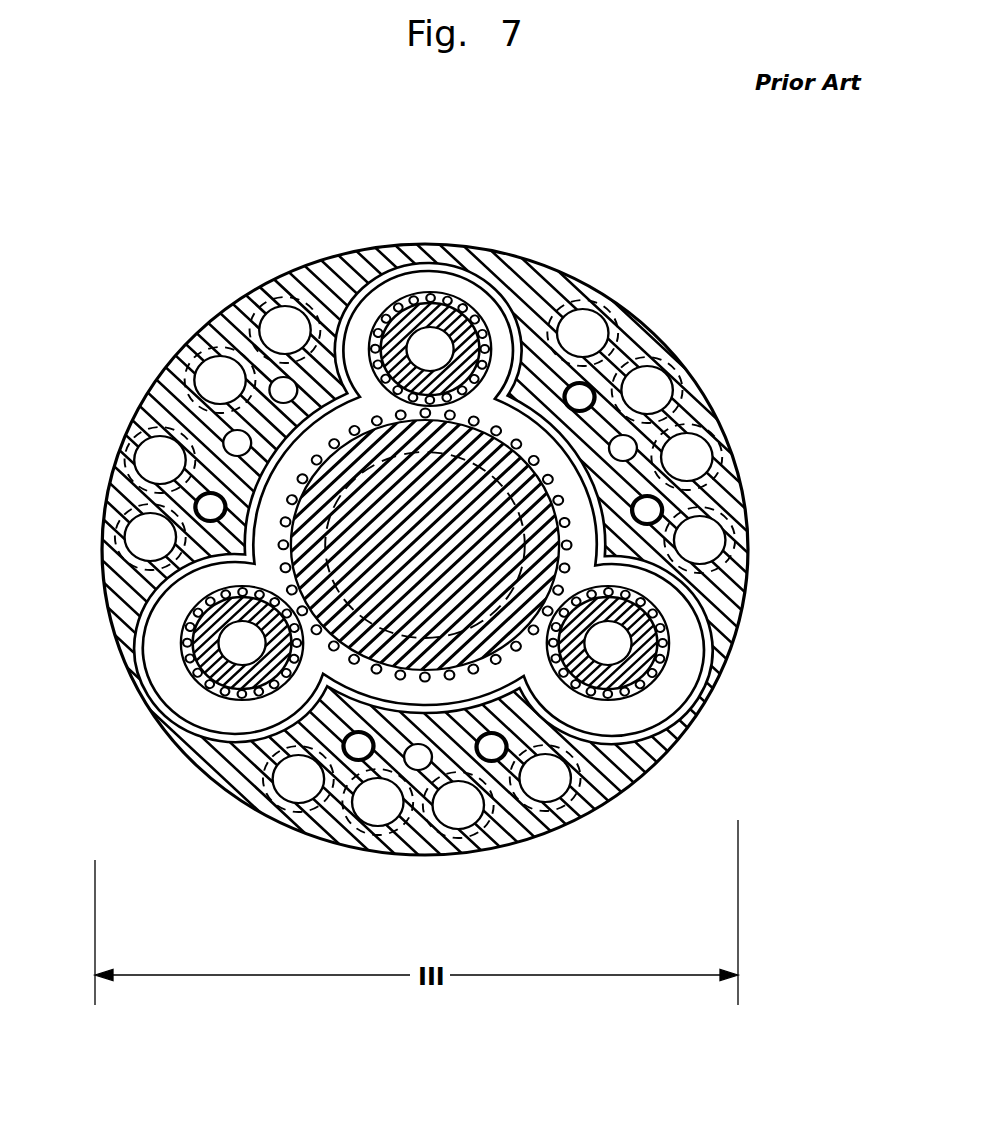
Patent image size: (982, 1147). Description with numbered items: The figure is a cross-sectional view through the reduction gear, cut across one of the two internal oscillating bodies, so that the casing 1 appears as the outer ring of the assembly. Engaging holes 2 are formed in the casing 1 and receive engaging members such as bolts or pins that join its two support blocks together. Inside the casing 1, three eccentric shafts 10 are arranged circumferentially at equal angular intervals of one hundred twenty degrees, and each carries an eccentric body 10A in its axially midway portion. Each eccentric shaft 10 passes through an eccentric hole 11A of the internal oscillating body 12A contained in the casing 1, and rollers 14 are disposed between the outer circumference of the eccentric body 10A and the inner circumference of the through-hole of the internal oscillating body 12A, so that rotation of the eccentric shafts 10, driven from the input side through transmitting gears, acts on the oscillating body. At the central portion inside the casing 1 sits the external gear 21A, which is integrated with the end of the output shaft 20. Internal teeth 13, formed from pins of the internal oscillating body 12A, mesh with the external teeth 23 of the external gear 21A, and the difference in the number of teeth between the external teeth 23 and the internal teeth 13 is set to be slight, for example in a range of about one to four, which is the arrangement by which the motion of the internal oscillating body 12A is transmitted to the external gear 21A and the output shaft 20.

The casing 1 is at (318, 832).
The engaging holes 2 is at (455, 815).
The eccentric shaft 10 is at (612, 655).
The eccentric body 10A is at (238, 645).
The eccentric hole 11A is at (632, 700).
The internal oscillating body 12A is at (500, 352).
The internal teeth 13 is at (372, 432).
The rollers 14 is at (205, 668).
The output shaft 20 is at (560, 498).
The external gear 21A is at (290, 562).
The external teeth 23 is at (470, 427).